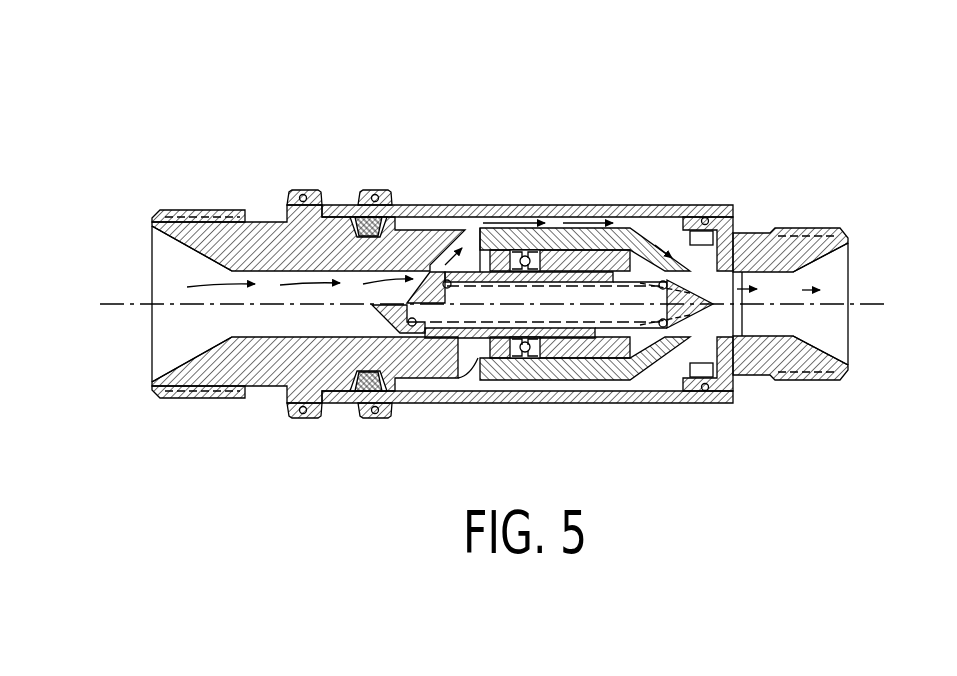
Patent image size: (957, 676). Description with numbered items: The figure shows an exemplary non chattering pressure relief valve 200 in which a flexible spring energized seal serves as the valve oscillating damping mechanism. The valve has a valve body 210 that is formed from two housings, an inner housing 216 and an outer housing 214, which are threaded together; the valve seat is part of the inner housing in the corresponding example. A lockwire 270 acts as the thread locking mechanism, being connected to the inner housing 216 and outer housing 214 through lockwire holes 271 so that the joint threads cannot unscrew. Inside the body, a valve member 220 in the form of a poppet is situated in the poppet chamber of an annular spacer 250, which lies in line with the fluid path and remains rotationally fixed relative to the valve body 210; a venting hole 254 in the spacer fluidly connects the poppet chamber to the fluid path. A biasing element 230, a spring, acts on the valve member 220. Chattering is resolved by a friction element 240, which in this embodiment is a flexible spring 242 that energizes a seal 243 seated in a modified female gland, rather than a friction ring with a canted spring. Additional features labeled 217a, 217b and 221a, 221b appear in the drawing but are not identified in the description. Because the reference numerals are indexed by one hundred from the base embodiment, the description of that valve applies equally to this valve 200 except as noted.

The non chattering pressure relief valve 200 is at (298, 78).
The valve body 210 is at (665, 404).
The outer housing 214 is at (657, 207).
The inner housing 216 is at (273, 228).
The inlet port 217a is at (152, 335).
The outlet port 217b is at (848, 333).
The valve member 220 is at (398, 333).
The inlet flange 221a is at (200, 211).
The outlet flange 221b is at (805, 227).
The biasing element 230 is at (627, 376).
The friction element 240 is at (508, 362).
The flexible spring 242 is at (548, 255).
The energized seal 243 is at (493, 258).
The spacer 250 is at (627, 242).
The venting hole 254 is at (737, 386).
The lockwire 270 is at (345, 420).
The lockwire holes 271 is at (297, 418).